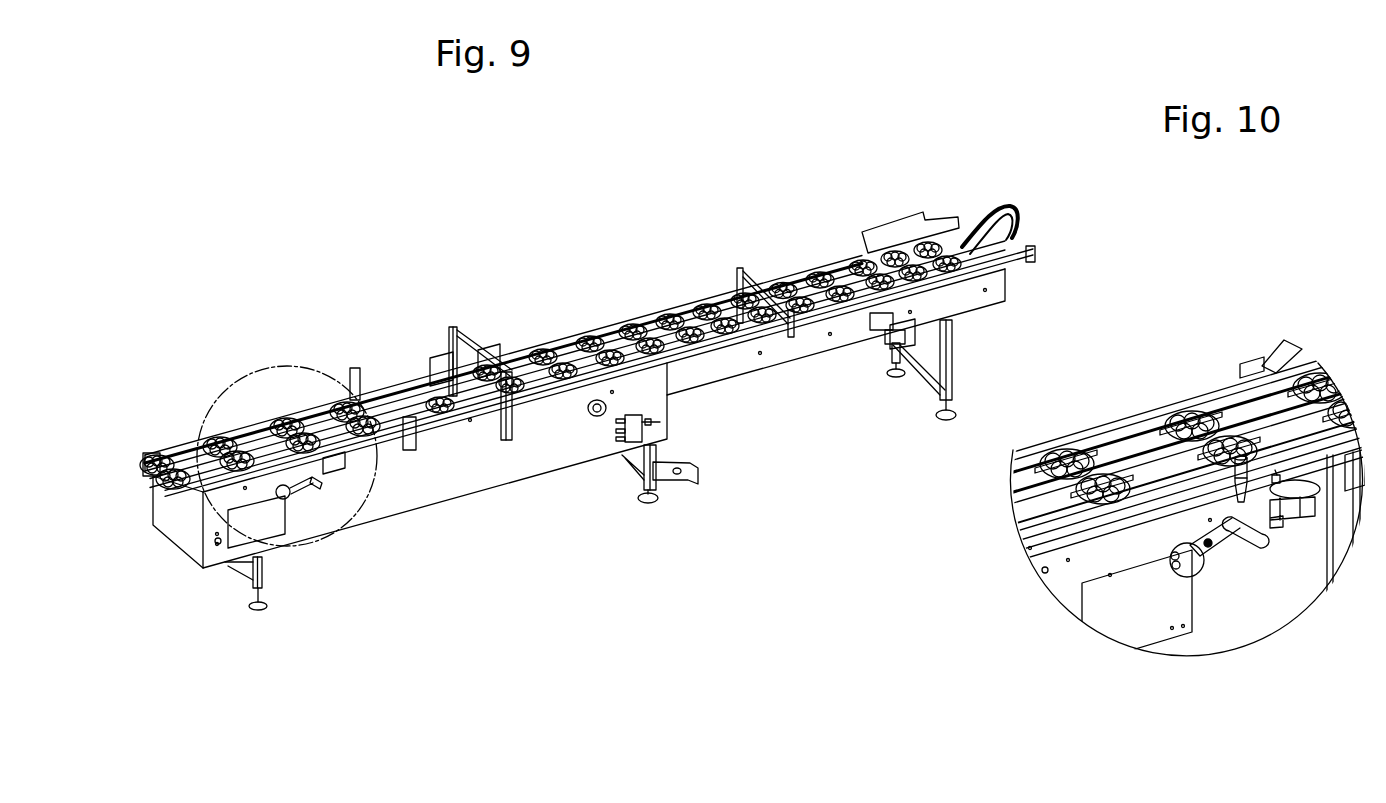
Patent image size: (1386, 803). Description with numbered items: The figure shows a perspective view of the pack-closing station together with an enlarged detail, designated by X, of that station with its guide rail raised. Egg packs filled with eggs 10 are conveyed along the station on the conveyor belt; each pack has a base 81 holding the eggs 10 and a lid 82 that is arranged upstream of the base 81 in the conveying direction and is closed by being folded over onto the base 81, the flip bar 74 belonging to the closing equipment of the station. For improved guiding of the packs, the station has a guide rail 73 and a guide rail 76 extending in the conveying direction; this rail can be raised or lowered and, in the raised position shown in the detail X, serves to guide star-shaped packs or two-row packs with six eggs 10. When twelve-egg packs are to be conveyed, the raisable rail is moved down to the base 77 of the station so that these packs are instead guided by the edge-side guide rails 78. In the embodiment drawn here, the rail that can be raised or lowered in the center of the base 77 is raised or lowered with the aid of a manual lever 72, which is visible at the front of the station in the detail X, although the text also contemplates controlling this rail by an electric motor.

In FIG. 9, the egg 10 is at (535, 345).
In FIG. 10, the egg 10 is at (1175, 417).
In FIG. 10, the manual lever 72 is at (1255, 545).
In FIG. 9, the guide rail 73 is at (700, 300).
In FIG. 10, the guide rail 73 is at (1142, 470).
In FIG. 9, the flip bar 74 is at (458, 325).
In FIG. 9, the insertion region 76 is at (727, 230).
In FIG. 10, the base 77 is at (1267, 407).
In FIG. 10, the guide rail 78 is at (1103, 437).
In FIG. 9, the base 81 is at (618, 337).
In FIG. 9, the lid 82 is at (577, 340).
In FIG. 10, the lid 82 is at (1197, 413).
In FIG. 9, the detail region X is at (272, 368).